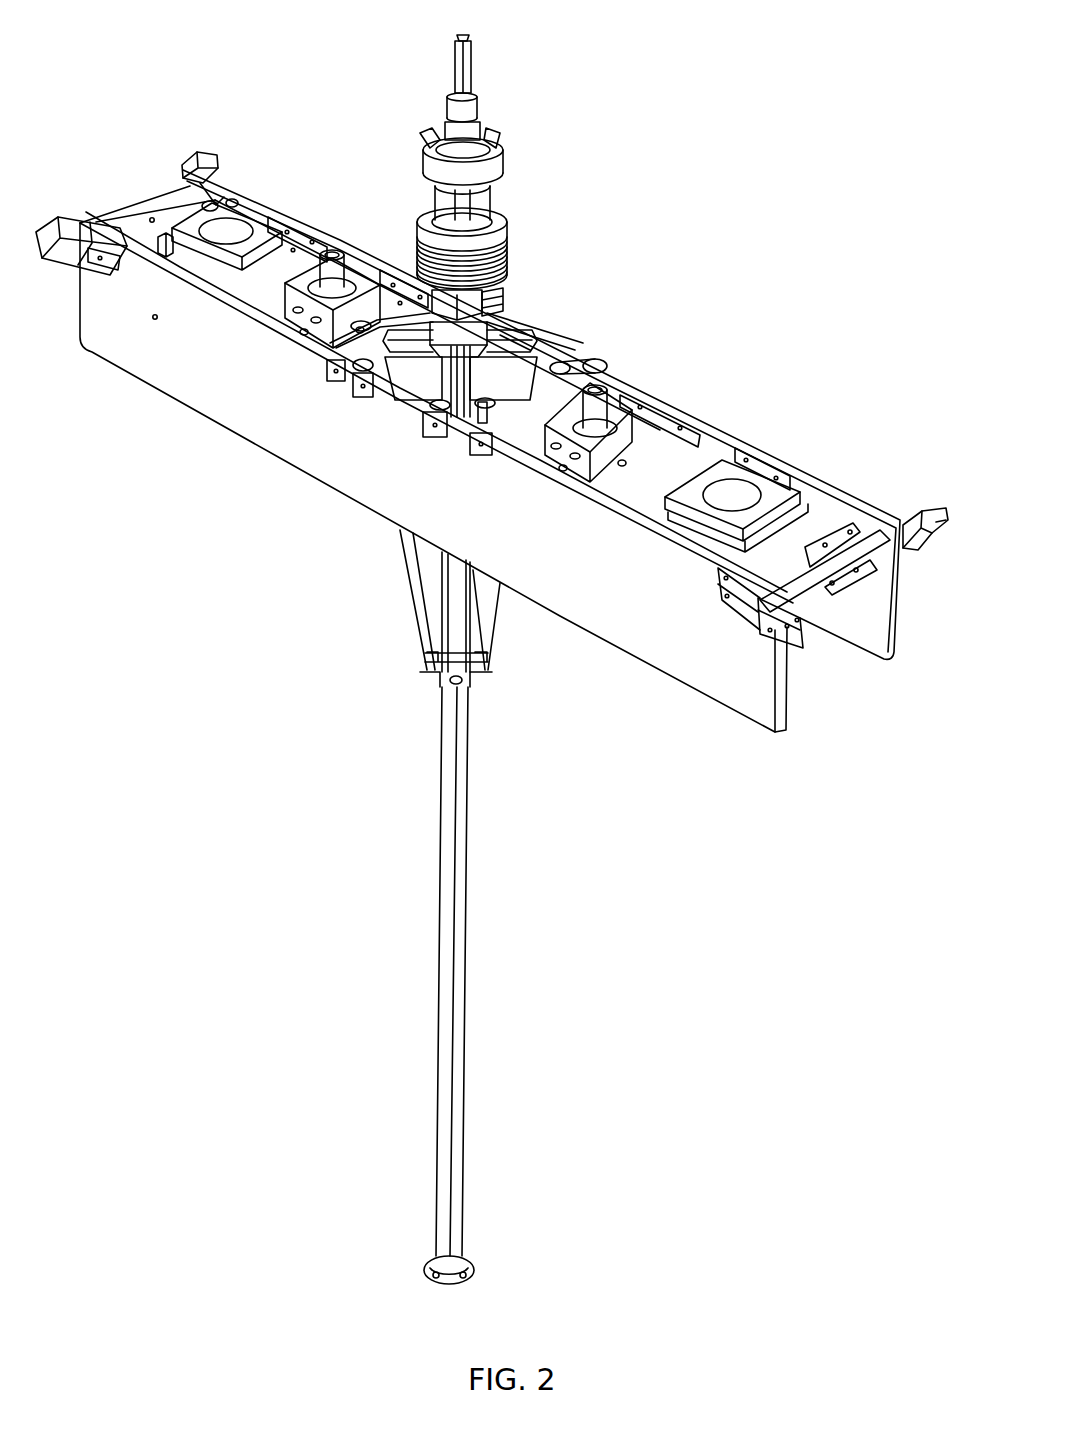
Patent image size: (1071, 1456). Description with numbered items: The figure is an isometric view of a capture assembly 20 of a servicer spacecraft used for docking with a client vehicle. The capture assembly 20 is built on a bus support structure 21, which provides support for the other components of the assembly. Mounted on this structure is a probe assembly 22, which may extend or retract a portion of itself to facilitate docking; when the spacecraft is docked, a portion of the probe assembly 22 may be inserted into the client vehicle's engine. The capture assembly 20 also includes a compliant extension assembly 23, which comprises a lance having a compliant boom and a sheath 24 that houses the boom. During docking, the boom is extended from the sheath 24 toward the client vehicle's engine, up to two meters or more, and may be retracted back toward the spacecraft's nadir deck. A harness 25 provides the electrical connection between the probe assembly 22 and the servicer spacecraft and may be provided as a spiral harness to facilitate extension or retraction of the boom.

The capture assembly 20 is at (303, 893).
The bus support structure 21 is at (282, 512).
The probe assembly 22 is at (530, 118).
The compliant extension assembly 23 is at (523, 299).
The sheath 24 is at (480, 939).
The harness 25 is at (538, 247).